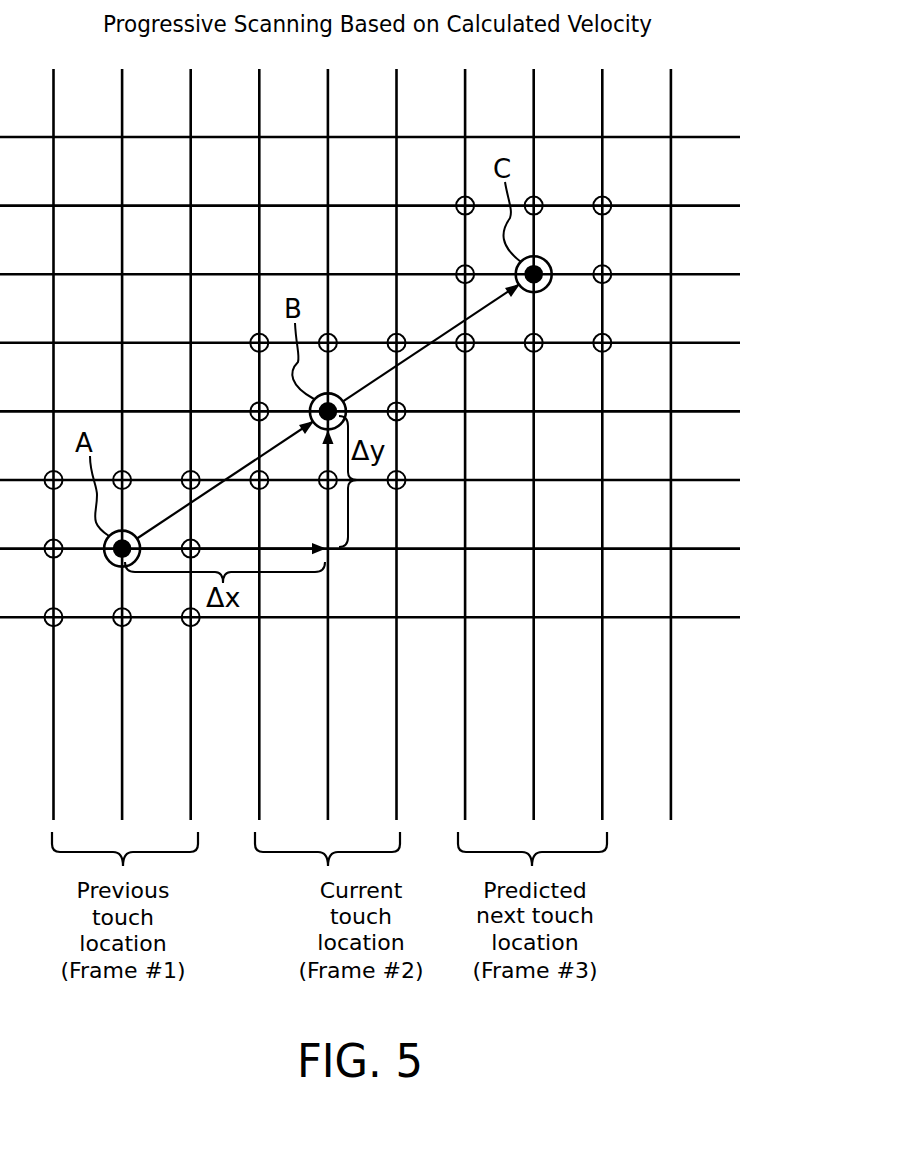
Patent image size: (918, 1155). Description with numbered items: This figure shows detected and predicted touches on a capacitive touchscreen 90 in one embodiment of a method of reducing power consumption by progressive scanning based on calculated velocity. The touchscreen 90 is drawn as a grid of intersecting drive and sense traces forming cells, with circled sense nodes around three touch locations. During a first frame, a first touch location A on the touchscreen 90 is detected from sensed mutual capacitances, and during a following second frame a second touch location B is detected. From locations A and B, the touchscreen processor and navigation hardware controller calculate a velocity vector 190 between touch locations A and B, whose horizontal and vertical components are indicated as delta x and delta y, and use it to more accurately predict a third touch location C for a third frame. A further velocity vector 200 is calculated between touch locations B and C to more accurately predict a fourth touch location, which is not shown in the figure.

The touchscreen 90 is at (734, 106).
The velocity vector 190 is at (240, 465).
The velocity vector 200 is at (445, 327).